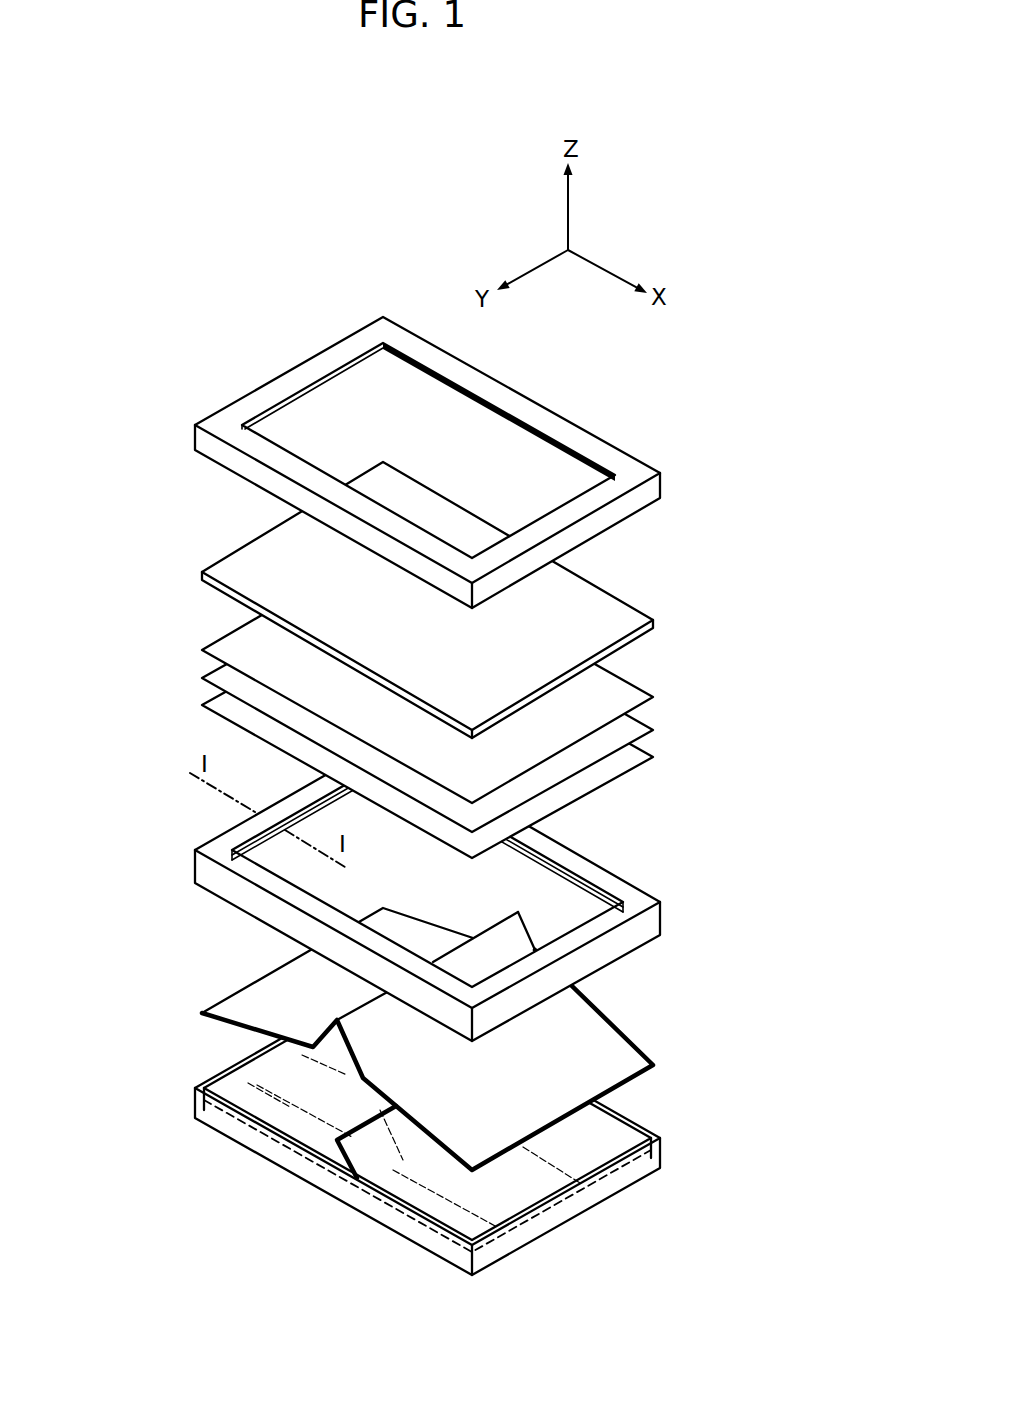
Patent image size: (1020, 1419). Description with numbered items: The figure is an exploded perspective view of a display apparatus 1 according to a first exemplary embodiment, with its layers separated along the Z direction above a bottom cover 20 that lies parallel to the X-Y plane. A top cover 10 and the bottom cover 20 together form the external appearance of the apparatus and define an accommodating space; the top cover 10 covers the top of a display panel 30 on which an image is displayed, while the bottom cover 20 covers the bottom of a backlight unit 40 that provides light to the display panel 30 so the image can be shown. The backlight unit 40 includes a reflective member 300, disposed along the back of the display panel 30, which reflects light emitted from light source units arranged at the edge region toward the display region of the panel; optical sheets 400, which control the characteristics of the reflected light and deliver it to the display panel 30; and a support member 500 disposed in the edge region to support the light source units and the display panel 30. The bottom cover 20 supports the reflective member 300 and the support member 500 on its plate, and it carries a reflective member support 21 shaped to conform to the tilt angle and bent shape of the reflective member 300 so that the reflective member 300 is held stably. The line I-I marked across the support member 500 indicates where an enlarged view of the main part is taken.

The display apparatus 1 is at (230, 290).
The top cover 10 is at (200, 442).
The bottom cover 20 is at (198, 1102).
The reflective member support 21 is at (301, 1127).
The display panel 30 is at (202, 579).
The backlight unit 40 is at (714, 845).
The reflective member 300 is at (203, 1013).
The optical sheets 400 is at (205, 651).
The support member 500 is at (200, 872).